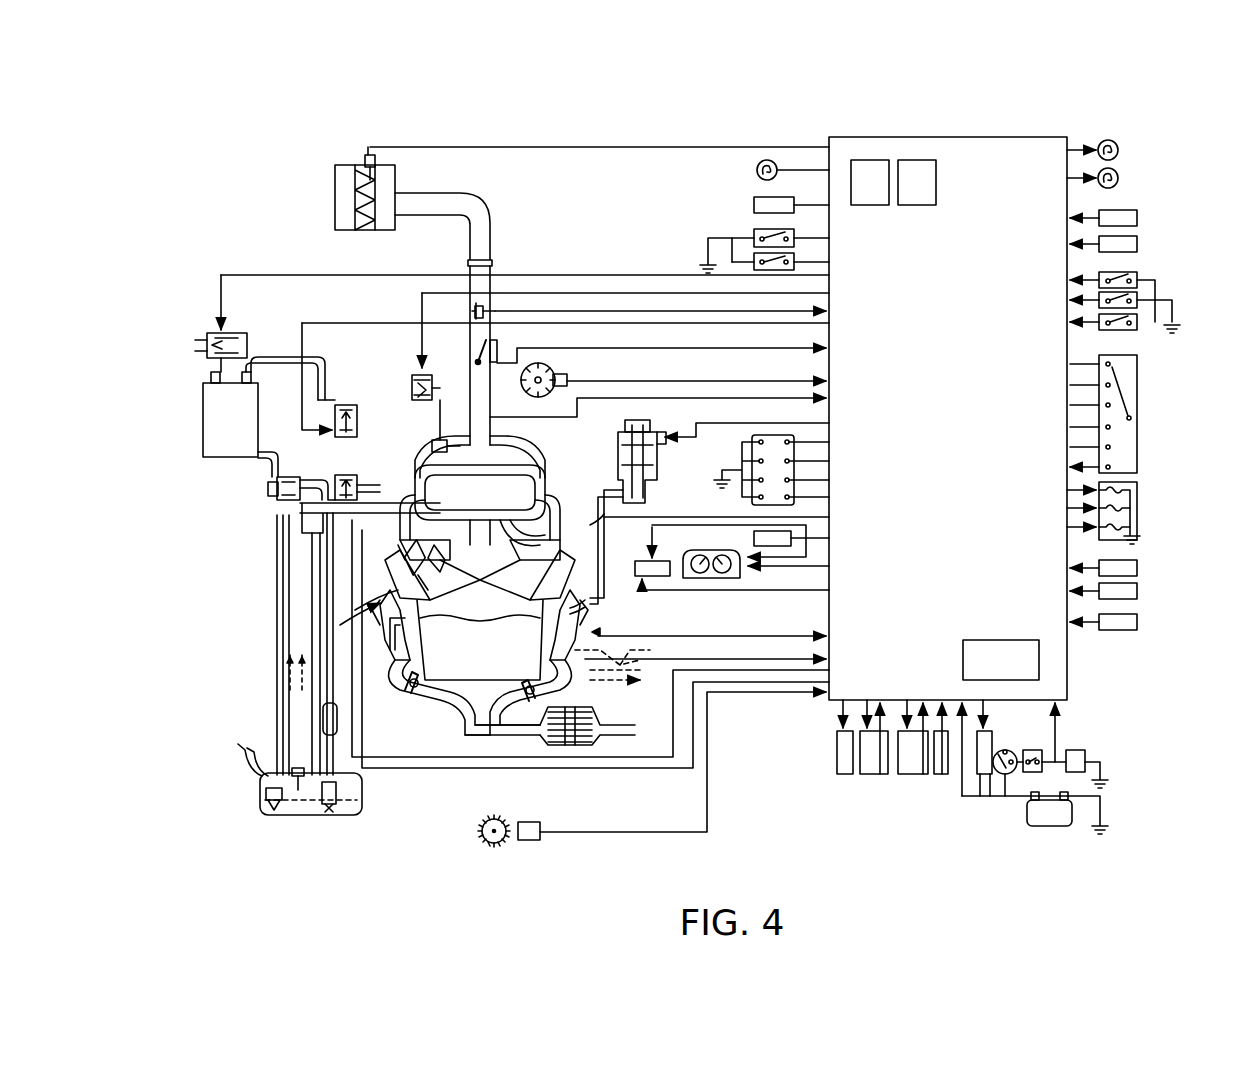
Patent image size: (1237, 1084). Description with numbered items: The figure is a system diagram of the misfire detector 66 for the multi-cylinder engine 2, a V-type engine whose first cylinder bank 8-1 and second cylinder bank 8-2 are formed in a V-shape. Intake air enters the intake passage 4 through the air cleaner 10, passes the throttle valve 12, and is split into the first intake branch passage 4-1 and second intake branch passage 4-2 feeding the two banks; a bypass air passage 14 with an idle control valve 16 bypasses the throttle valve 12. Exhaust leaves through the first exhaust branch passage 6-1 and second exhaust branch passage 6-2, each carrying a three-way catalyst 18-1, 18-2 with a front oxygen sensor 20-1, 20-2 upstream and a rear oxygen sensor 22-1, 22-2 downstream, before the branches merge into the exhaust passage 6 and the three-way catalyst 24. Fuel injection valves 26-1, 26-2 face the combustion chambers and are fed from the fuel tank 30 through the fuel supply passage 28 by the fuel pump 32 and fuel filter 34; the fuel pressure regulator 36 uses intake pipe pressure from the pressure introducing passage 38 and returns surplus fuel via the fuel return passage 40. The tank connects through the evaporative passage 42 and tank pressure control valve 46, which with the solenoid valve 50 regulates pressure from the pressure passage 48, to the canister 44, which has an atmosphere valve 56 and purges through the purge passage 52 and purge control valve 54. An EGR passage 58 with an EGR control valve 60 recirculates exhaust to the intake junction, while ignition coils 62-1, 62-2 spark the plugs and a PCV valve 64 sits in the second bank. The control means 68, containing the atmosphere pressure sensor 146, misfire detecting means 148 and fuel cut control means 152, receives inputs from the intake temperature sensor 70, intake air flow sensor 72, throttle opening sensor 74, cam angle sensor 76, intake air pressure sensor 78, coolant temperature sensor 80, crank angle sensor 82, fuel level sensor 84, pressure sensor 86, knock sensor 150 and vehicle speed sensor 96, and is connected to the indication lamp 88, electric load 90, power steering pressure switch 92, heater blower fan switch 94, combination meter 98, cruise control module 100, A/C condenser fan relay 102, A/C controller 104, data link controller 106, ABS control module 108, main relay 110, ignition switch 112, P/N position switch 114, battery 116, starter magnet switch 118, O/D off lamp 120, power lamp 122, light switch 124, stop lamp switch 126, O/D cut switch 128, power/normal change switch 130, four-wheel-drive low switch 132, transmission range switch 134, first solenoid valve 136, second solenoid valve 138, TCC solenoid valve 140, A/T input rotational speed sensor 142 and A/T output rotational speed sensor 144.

The multi-cylinder engine 2 is at (345, 625).
The intake passage 4 is at (480, 204).
The first intake branch passage 4-1 is at (440, 455).
The second intake branch passage 4-2 is at (528, 462).
The exhaust passage 6 is at (478, 742).
The first exhaust branch passage 6-1 is at (405, 612).
The second exhaust branch passage 6-2 is at (556, 612).
The first cylinder bank 8-1 is at (388, 612).
The second cylinder bank 8-2 is at (568, 600).
The air cleaner 10 is at (345, 183).
The throttle valve 12 is at (478, 364).
The bypass air passage 14 is at (455, 395).
The idle control valve 16 is at (412, 380).
The first three-way catalyst 18-1 is at (410, 690).
The second three-way catalyst 18-2 is at (525, 700).
The first front oxygen sensor 20-1 is at (372, 640).
The second front oxygen sensor 20-2 is at (575, 668).
The first rear oxygen sensor 22-1 is at (410, 700).
The second rear oxygen sensor 22-2 is at (530, 700).
The three-way catalyst 24 is at (590, 740).
The first fuel injection valve 26-1 is at (408, 560).
The second fuel injection valve 26-2 is at (462, 548).
The fuel supply passage 28 is at (330, 672).
The fuel tank 30 is at (260, 803).
The fuel pump 32 is at (340, 800).
The fuel filter 34 is at (323, 718).
The fuel pressure regulator 36 is at (314, 538).
The pressure introducing passage 38 is at (306, 508).
The fuel return passage 40 is at (286, 692).
The evaporative passage 42 is at (266, 456).
The canister 44 is at (210, 413).
The tank pressure control valve 46 is at (270, 488).
The pressure passage 48 is at (284, 477).
The solenoid valve 50 is at (338, 475).
The purge passage 52 is at (282, 358).
The purge control valve 54 is at (346, 405).
The atmosphere valve 56 is at (207, 338).
The EGR passage 58 is at (604, 558).
The EGR control valve 60 is at (660, 462).
The first ignition coil 62-1 is at (440, 550).
The second ignition coil 62-2 is at (605, 526).
The PCV valve 64 is at (542, 530).
The misfire detector 66 is at (1098, 115).
The control means 68 is at (844, 134).
The intake temperature sensor 70 is at (364, 156).
The intake air flow sensor 72 is at (488, 310).
The throttle opening sensor 74 is at (496, 345).
The cam angle sensor 76 is at (560, 375).
The intake air pressure sensor 78 is at (432, 444).
The coolant temperature sensor 80 is at (598, 604).
The crank angle sensor 82 is at (528, 842).
The fuel level sensor 84 is at (278, 812).
The pressure sensor 86 is at (300, 792).
The indication lamp 88 is at (757, 170).
The electric load 90 is at (754, 205).
The power steering pressure switch 92 is at (752, 232).
The heater blower fan switch 94 is at (752, 267).
The vehicle speed sensor 96 is at (775, 548).
The combination meter 98 is at (708, 580).
The cruise control module 100 is at (655, 578).
The A/C condenser fan relay 102 is at (843, 778).
The A/C controller 104 is at (872, 778).
The data link controller 106 is at (910, 778).
The ABS control module 108 is at (941, 778).
The main relay 110 is at (978, 778).
The ignition switch 112 is at (1002, 778).
The P/N position switch 114 is at (1040, 750).
The battery 116 is at (1046, 820).
The starter magnet switch 118 is at (1085, 758).
The O/D off lamp 120 is at (1118, 150).
The power lamp 122 is at (1118, 178).
The light switch 124 is at (1137, 218).
The stop lamp switch 126 is at (1137, 244).
The O/D cut switch 128 is at (1137, 275).
The power/normal change switch 130 is at (1137, 296).
The four-wheel-drive low switch 132 is at (1130, 330).
The transmission range switch 134 is at (1137, 392).
The first solenoid valve 136 is at (1120, 488).
The second solenoid valve 138 is at (1130, 505).
The TCC solenoid valve 140 is at (1125, 533).
The A/T input rotational speed sensor 142 is at (1137, 568).
The A/T output rotational speed sensor 144 is at (1137, 591).
The atmosphere pressure sensor 146 is at (1030, 664).
The misfire detecting means 148 is at (869, 170).
The knock sensor 150 is at (1137, 622).
The fuel cut control means 152 is at (917, 170).